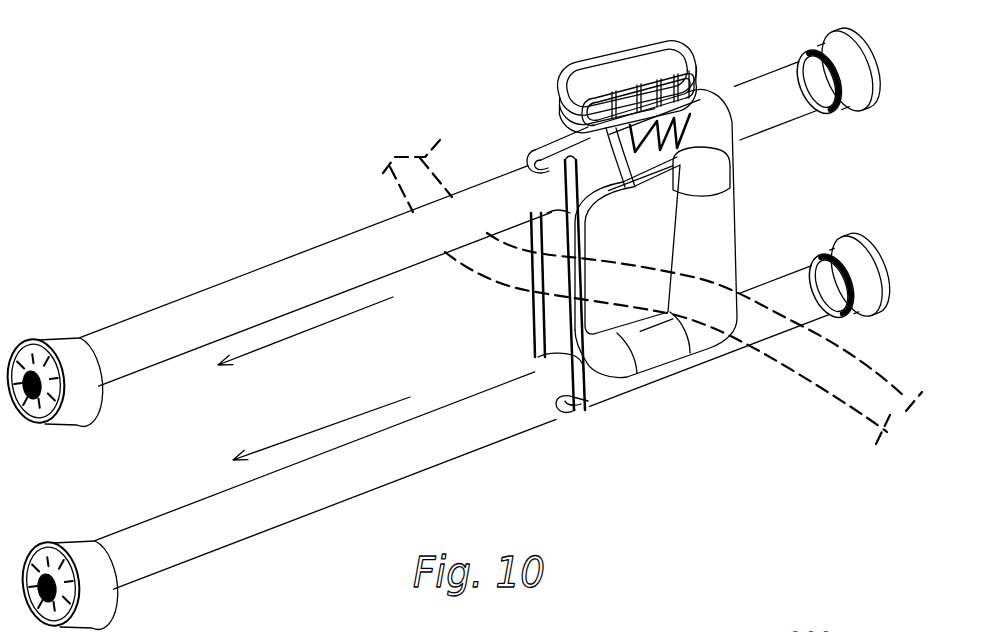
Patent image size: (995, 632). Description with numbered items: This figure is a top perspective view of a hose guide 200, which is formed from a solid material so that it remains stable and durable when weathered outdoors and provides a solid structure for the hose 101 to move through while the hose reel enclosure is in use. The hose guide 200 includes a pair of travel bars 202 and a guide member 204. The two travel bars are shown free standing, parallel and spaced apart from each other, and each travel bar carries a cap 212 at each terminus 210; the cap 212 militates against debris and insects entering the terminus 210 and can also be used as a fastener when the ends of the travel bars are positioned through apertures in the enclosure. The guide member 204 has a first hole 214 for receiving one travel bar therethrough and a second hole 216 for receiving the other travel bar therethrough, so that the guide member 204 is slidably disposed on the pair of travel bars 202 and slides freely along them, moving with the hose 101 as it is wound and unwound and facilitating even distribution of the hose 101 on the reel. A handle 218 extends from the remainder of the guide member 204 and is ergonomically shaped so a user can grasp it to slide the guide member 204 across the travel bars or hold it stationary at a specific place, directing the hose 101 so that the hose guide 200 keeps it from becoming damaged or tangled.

The hose guide 200 is at (462, 316).
The hose 101 is at (418, 157).
The pair of travel bars 202 is at (800, 287).
The guide member 204 is at (707, 358).
The terminus 210 is at (127, 338).
The cap 212 is at (42, 390).
The first hole 214 is at (538, 164).
The second hole 216 is at (565, 405).
The handle 218 is at (624, 62).